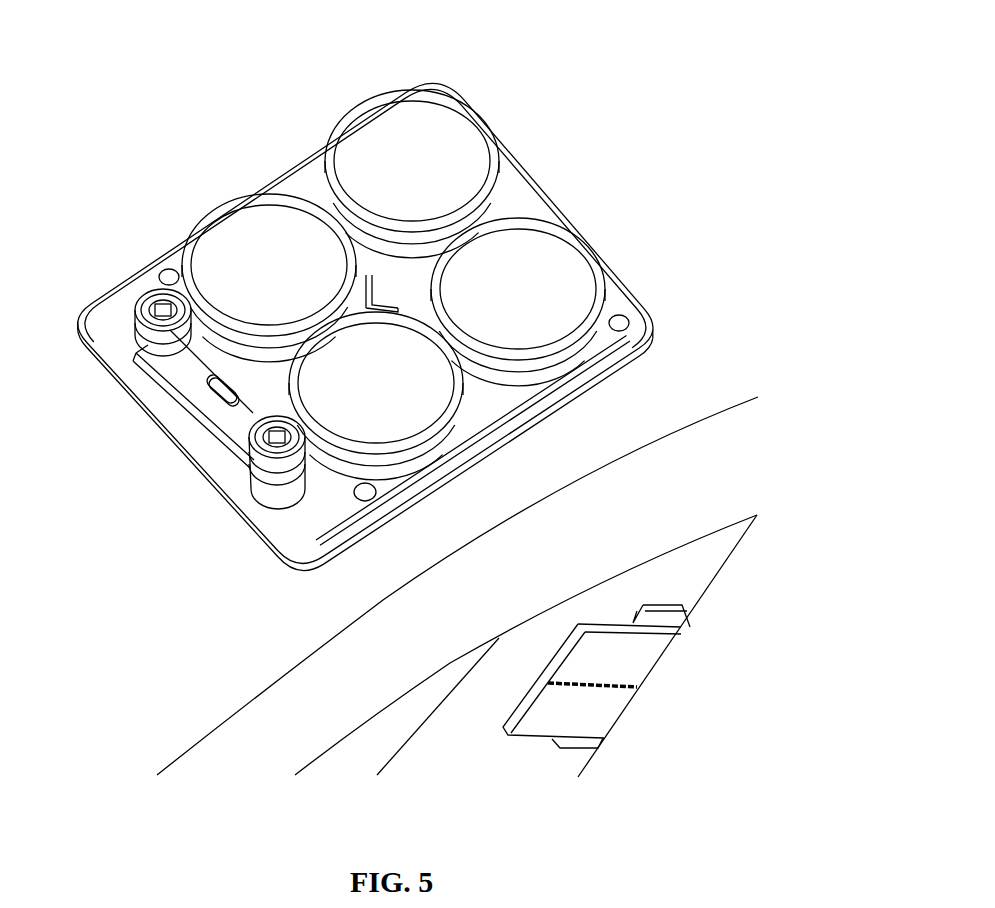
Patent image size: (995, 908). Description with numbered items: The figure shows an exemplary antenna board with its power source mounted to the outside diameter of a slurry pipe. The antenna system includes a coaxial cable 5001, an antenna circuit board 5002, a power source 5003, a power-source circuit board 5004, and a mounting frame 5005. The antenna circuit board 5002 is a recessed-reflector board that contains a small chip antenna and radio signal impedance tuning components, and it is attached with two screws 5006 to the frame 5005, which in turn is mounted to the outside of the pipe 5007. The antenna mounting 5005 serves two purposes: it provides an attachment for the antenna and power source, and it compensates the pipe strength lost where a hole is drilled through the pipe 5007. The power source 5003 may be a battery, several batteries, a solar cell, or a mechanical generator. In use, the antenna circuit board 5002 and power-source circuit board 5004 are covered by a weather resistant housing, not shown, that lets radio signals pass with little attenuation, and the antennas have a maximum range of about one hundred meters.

The coaxial cable 5001 is at (258, 368).
The antenna circuit board 5002 is at (192, 363).
The power source 5003 is at (432, 155).
The power-source circuit board 5004 is at (518, 203).
The mounting frame 5005 is at (653, 343).
The screws 5006 is at (247, 469).
The pipe 5007 is at (720, 490).